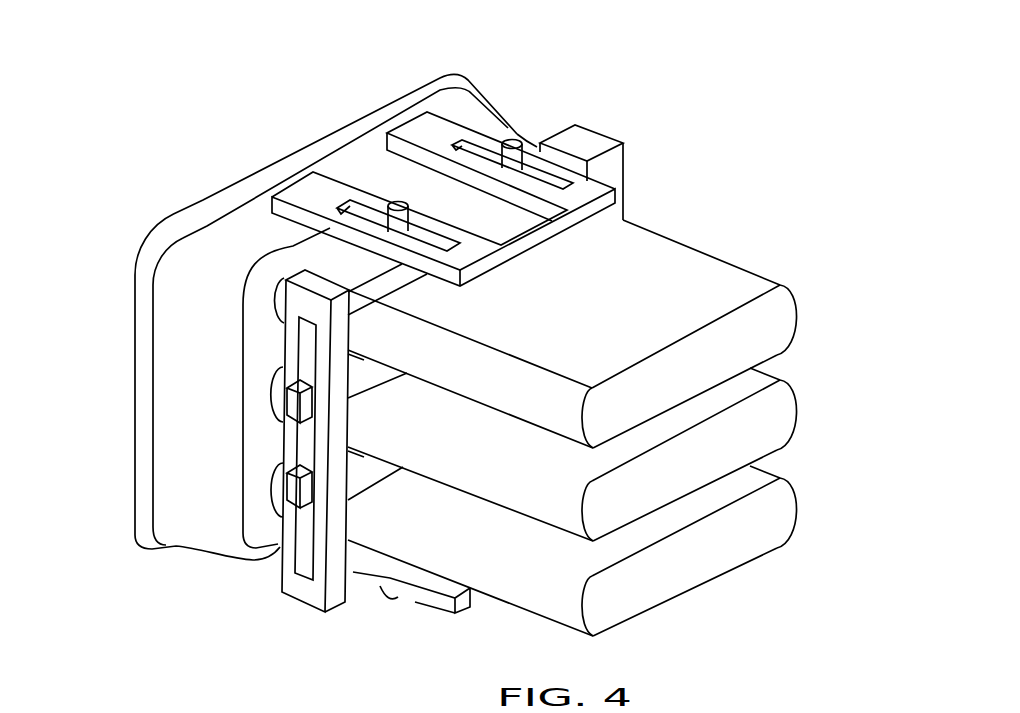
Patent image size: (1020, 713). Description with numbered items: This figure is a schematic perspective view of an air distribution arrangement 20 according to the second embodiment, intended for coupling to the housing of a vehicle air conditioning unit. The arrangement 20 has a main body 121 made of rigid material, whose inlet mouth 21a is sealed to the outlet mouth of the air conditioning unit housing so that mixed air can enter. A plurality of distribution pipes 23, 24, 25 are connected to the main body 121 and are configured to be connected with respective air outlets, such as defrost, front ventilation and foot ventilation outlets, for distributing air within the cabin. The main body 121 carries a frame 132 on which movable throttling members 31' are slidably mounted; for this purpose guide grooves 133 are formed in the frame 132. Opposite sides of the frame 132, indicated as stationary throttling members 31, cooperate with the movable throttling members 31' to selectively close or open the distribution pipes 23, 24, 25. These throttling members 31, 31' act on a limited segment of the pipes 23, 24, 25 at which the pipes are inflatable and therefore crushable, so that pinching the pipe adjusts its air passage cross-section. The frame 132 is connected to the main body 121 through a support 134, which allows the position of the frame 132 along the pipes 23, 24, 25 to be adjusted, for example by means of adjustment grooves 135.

The air distribution arrangement 20 is at (611, 361).
The inlet mouth 21a is at (210, 213).
The distribution pipe 23 is at (693, 285).
The distribution pipe 24 is at (752, 387).
The distribution pipe 25 is at (738, 485).
The stationary throttling member 31 is at (486, 371).
The movable throttling member 31' is at (180, 397).
The main body 121 is at (363, 157).
The frame 132 is at (613, 127).
The guide groove 133 is at (307, 542).
The support 134 is at (538, 140).
The adjustment groove 135 is at (367, 212).